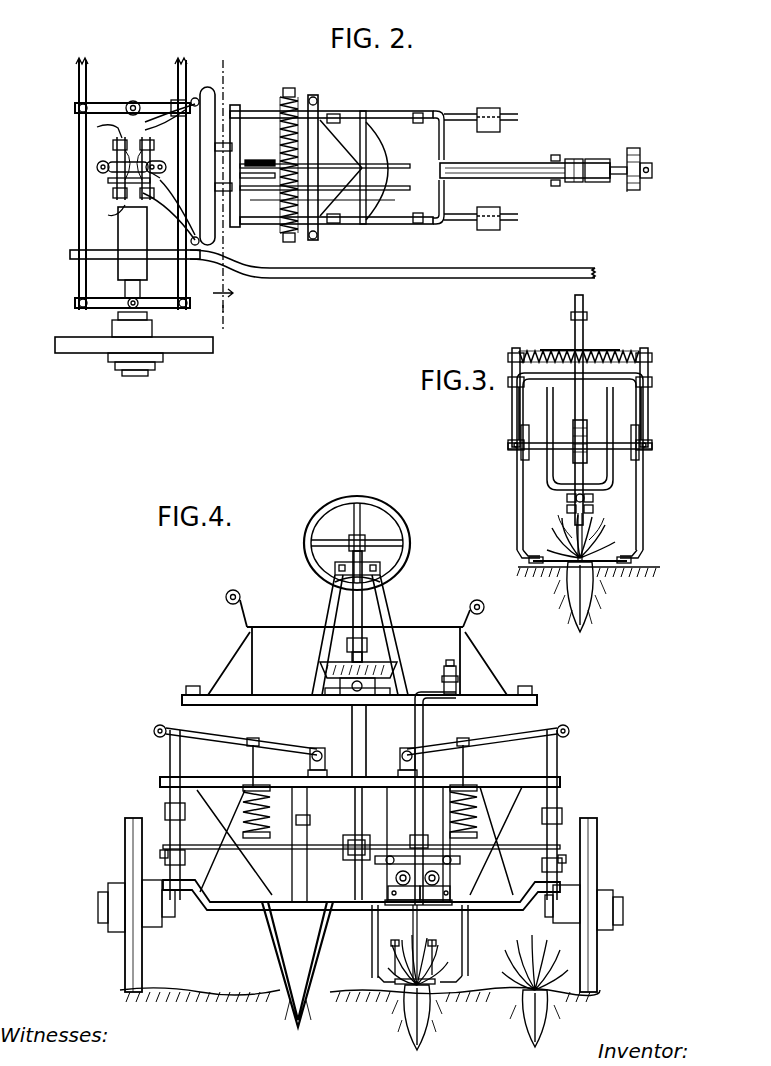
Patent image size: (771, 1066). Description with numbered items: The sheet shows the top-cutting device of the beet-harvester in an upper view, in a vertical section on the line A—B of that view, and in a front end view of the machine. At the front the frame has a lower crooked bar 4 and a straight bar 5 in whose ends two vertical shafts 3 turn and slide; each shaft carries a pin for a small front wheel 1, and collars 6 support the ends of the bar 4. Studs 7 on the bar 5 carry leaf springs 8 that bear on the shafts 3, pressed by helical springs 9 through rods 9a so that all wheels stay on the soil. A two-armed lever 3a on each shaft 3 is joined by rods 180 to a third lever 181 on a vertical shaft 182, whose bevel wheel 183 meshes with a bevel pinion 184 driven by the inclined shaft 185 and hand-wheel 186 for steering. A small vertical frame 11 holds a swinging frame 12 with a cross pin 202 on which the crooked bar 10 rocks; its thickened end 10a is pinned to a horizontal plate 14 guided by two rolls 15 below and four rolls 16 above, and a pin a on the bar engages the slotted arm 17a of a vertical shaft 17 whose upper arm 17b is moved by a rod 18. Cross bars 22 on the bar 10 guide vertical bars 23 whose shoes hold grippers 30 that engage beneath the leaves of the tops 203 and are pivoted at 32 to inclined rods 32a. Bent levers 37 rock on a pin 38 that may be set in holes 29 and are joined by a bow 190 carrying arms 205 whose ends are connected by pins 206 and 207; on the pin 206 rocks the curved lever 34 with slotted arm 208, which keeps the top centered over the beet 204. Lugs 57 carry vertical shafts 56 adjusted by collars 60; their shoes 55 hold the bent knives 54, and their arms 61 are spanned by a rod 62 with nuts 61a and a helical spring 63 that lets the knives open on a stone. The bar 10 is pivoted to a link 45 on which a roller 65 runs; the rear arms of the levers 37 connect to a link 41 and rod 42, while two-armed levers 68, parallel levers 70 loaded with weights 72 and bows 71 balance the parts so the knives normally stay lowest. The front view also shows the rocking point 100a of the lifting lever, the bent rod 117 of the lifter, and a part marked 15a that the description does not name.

In FIG. 2, the front wheel 1 is at (186, 349).
In FIG. 4, the front wheel 1 is at (125, 856).
In FIG. 2, the vertical shaft 3 is at (122, 307).
In FIG. 4, the vertical shaft 3 is at (170, 757).
In FIG. 2, the two-armed lever 3a is at (182, 308).
In FIG. 4, the two-armed lever 3a is at (185, 852).
In FIG. 4, the lower crooked bar 4 is at (246, 910).
In FIG. 4, the straight bar 5 is at (222, 787).
In FIG. 4, the collar 6 is at (186, 905).
In FIG. 4, the stud 7 is at (325, 757).
In FIG. 4, the lever or leaf spring 8 is at (226, 740).
In FIG. 4, the helical spring 9 is at (272, 806).
In FIG. 4, the rod 9a is at (253, 757).
In FIG. 2, the crooked bar 10 is at (247, 160).
In FIG. 3, the crooked bar 10 is at (585, 440).
In FIG. 2, the front thickened end 10a is at (115, 145).
In FIG. 4, the front thickened end 10a is at (440, 858).
In FIG. 2, the small vertical frame 11 is at (636, 150).
In FIG. 2, the smaller frame 12 is at (628, 160).
In FIG. 4, the smaller frame 12 is at (424, 729).
In FIG. 2, the horizontal plate 14 is at (118, 239).
In FIG. 4, the horizontal plate 14 is at (380, 850).
In FIG. 4, the roll 15 is at (436, 900).
In FIG. 2, the curved arm 15a is at (118, 140).
In FIG. 4, the roll 16 is at (398, 856).
In FIG. 2, the vertical shaft 17 is at (96, 167).
In FIG. 2, the slotted arm 17a is at (108, 185).
In FIG. 4, the slotted arm 17a is at (419, 835).
In FIG. 4, the upper arm 17b is at (436, 690).
In FIG. 4, the rod 18 is at (458, 670).
In FIG. 2, the cross bar 22 is at (200, 96).
In FIG. 2, the vertical bar 23 is at (214, 115).
In FIG. 2, the hole 29 is at (196, 98).
In FIG. 2, the gripper 30 is at (118, 124).
In FIG. 2, the pivot connection 32 is at (225, 143).
In FIG. 2, the inclined rod 32a is at (325, 167).
In FIG. 4, the inclined rod 32a is at (417, 949).
In FIG. 3, the curved lever 34 is at (584, 527).
In FIG. 4, the curved lever 34 is at (420, 950).
In FIG. 2, the bent lever 37 is at (480, 163).
In FIG. 3, the bent lever 37 is at (531, 442).
In FIG. 2, the pin 38 is at (555, 186).
In FIG. 2, the link 41 is at (575, 159).
In FIG. 2, the rod 42 is at (508, 165).
In FIG. 3, the link 45 is at (585, 325).
In FIG. 2, the knife 54 is at (340, 118).
In FIG. 3, the knife 54 is at (540, 578).
In FIG. 4, the knife 54 is at (360, 1010).
In FIG. 3, the shoe 55 is at (529, 560).
In FIG. 4, the shoe 55 is at (384, 980).
In FIG. 3, the vertical shaft 56 is at (517, 512).
In FIG. 4, the vertical shaft 56 is at (372, 934).
In FIG. 3, the lug 57 is at (648, 392).
In FIG. 3, the loose collar 60 is at (652, 380).
In FIG. 2, the arm 61 is at (313, 96).
In FIG. 3, the arm 61 is at (516, 348).
In FIG. 2, the nut 61a is at (289, 88).
In FIG. 3, the nut 61a is at (508, 356).
In FIG. 2, the rod 62 is at (285, 102).
In FIG. 3, the rod 62 is at (610, 350).
In FIG. 2, the helical spring 63 is at (322, 118).
In FIG. 3, the helical spring 63 is at (555, 372).
In FIG. 2, the roller 65 is at (365, 170).
In FIG. 2, the two-armed lever 68 is at (385, 218).
In FIG. 2, the parallel lever 70 is at (457, 114).
In FIG. 2, the bow 71 is at (420, 123).
In FIG. 2, the weight 72 is at (500, 125).
In FIG. 4, the rocking point 100a is at (307, 820).
In FIG. 4, the bent rod 117 is at (322, 946).
In FIG. 2, the rod 180 is at (82, 219).
In FIG. 4, the rod 180 is at (512, 848).
In FIG. 2, the two-armed lever 181 is at (107, 103).
In FIG. 4, the two-armed lever 181 is at (343, 842).
In FIG. 2, the vertical shaft 182 is at (142, 95).
In FIG. 4, the vertical shaft 182 is at (360, 733).
In FIG. 4, the bevel wheel 183 is at (395, 662).
In FIG. 4, the bevel pinion 184 is at (340, 681).
In FIG. 4, the inclined shaft 185 is at (348, 600).
In FIG. 4, the hand-wheel 186 is at (405, 565).
In FIG. 2, the bow 190 is at (244, 230).
In FIG. 3, the bow 190 is at (532, 373).
In FIG. 2, the cross pin 202 is at (640, 183).
In FIG. 3, the top 203 is at (605, 540).
In FIG. 4, the top 203 is at (478, 960).
In FIG. 3, the beet 204 is at (568, 608).
In FIG. 4, the beet 204 is at (285, 1020).
In FIG. 3, the arm 205 is at (547, 470).
In FIG. 3, the lower pin 206 is at (567, 509).
In FIG. 3, the upper pin 207 is at (567, 492).
In FIG. 3, the slotted arm 208 is at (580, 494).
In FIG. 2, the section line A—B A is at (223, 191).
In FIG. 2, the section line A— B is at (223, 317).
In FIG. 2, the pin a is at (159, 184).